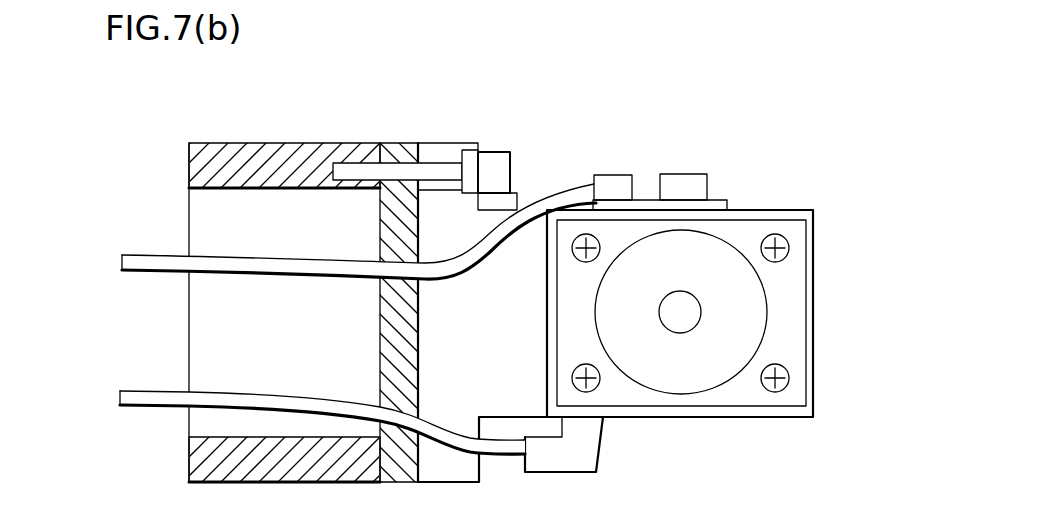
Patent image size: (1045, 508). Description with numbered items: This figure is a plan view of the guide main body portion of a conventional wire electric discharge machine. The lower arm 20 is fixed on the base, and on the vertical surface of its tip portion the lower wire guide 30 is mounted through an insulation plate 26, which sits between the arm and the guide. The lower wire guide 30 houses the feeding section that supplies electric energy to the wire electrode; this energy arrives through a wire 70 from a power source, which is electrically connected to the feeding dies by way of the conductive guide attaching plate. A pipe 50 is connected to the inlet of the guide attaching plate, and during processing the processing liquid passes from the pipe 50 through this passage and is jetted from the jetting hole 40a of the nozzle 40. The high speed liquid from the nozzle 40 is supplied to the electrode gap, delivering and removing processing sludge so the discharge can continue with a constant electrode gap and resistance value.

The lower arm 20 is at (262, 143).
The insulation plate 26 is at (400, 143).
The lower wire guide 30 is at (513, 204).
The nozzle 40 is at (753, 308).
The jetting hole 40a is at (680, 325).
The pipe 50 is at (146, 410).
The wire 70 is at (149, 254).